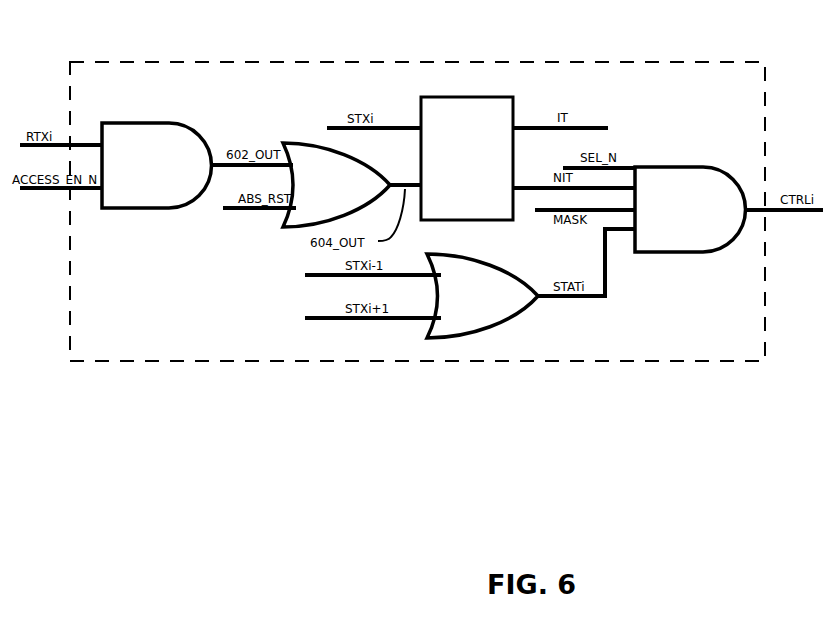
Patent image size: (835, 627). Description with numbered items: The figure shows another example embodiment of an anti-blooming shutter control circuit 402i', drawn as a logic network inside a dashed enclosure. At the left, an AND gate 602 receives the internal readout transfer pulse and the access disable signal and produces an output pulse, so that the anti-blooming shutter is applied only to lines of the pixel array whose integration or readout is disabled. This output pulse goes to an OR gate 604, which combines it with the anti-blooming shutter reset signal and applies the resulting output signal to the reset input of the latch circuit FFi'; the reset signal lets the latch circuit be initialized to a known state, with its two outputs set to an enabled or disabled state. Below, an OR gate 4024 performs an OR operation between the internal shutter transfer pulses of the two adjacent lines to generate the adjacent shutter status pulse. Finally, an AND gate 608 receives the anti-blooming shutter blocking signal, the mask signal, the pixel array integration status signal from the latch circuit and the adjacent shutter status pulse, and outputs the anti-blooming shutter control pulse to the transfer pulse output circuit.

The anti-blooming shutter control circuit 402i' is at (417, 196).
The AND gate 602 is at (157, 165).
The OR gate 604 is at (336, 185).
The latch circuit FFi' is at (467, 158).
The OR gate 4024 is at (482, 296).
The AND gate 608 is at (690, 209).